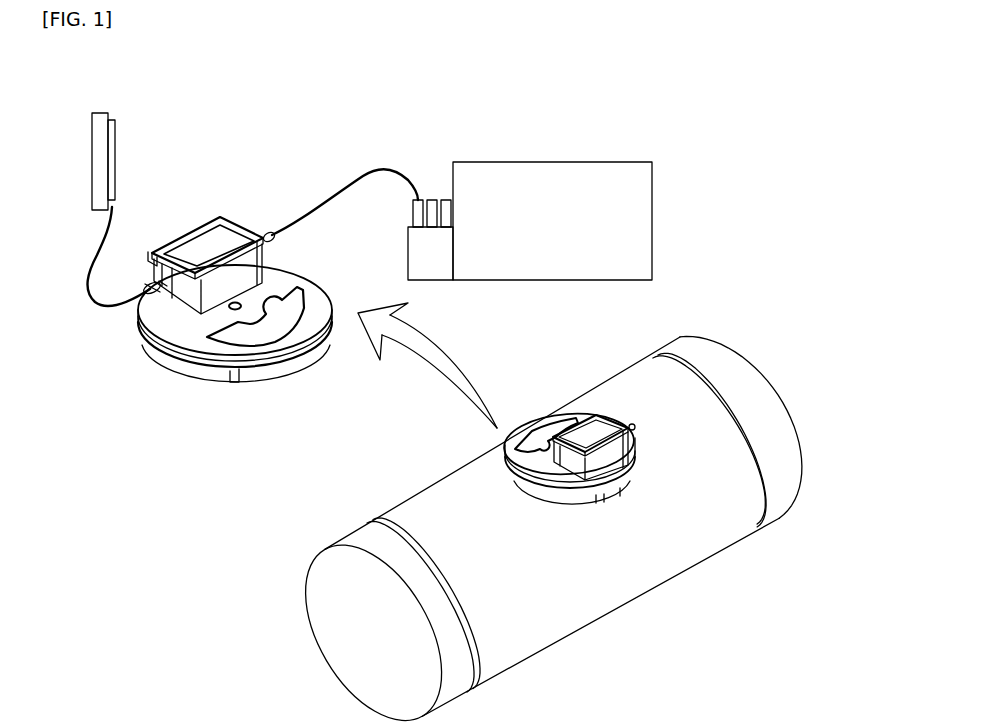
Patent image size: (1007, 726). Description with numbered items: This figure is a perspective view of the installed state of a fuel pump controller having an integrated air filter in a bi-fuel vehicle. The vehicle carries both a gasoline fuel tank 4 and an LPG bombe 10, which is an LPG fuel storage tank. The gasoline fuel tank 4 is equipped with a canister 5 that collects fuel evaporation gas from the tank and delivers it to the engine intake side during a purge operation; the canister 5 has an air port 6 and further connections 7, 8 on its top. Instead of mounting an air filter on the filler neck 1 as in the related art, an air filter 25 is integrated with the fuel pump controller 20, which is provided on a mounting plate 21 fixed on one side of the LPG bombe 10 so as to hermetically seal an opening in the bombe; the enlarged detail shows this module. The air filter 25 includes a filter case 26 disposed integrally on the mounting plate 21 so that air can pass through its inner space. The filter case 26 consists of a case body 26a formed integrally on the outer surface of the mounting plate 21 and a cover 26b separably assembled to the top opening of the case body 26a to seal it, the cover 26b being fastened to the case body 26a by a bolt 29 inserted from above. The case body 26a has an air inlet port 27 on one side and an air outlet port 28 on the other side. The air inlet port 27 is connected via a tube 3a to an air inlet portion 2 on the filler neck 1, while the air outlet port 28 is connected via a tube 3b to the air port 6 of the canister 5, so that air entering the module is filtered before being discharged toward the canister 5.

The filler neck 1 is at (134, 135).
The air inlet portion 2 is at (117, 140).
The tube 3a is at (98, 255).
The tube 3b is at (337, 190).
The gasoline fuel tank 4 is at (540, 162).
The canister 5 is at (407, 252).
The air port 6 is at (403, 175).
The terminal 7 is at (432, 199).
The terminal 8 is at (445, 199).
The LPG bombe 10 is at (412, 480).
The fuel pump controller 20 is at (590, 410).
The mounting plate 21 is at (245, 337).
The air filter 25 is at (172, 358).
The filter case 26 is at (207, 226).
The case body 26a is at (242, 243).
The cover 26b is at (207, 243).
The air inlet port 27 is at (150, 298).
The air outlet port 28 is at (274, 241).
The bolt 29 is at (156, 252).